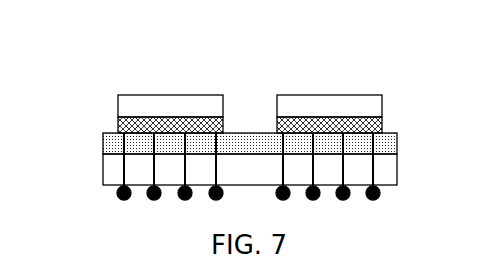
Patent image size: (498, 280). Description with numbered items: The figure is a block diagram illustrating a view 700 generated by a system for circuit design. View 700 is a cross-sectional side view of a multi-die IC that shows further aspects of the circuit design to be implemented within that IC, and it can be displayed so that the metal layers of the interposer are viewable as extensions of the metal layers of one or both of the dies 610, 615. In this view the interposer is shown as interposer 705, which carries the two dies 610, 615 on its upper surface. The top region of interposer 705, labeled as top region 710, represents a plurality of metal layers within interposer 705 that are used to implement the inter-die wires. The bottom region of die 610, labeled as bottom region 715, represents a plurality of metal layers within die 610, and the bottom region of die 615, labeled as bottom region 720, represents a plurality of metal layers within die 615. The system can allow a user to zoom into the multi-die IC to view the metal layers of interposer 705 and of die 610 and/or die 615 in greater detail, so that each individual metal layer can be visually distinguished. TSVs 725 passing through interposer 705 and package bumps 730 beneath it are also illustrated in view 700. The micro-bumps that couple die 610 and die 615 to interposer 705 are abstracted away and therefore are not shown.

The view 700 is at (233, 41).
The interposer 705 is at (103, 173).
The top region of interposer 710 is at (96, 133).
The bottom region of die 610 715 is at (226, 117).
The bottom region of die 615 720 is at (383, 117).
The TSVs 725 is at (153, 176).
The package bumps 730 is at (375, 200).
The die 610 is at (172, 95).
The die 615 is at (325, 95).